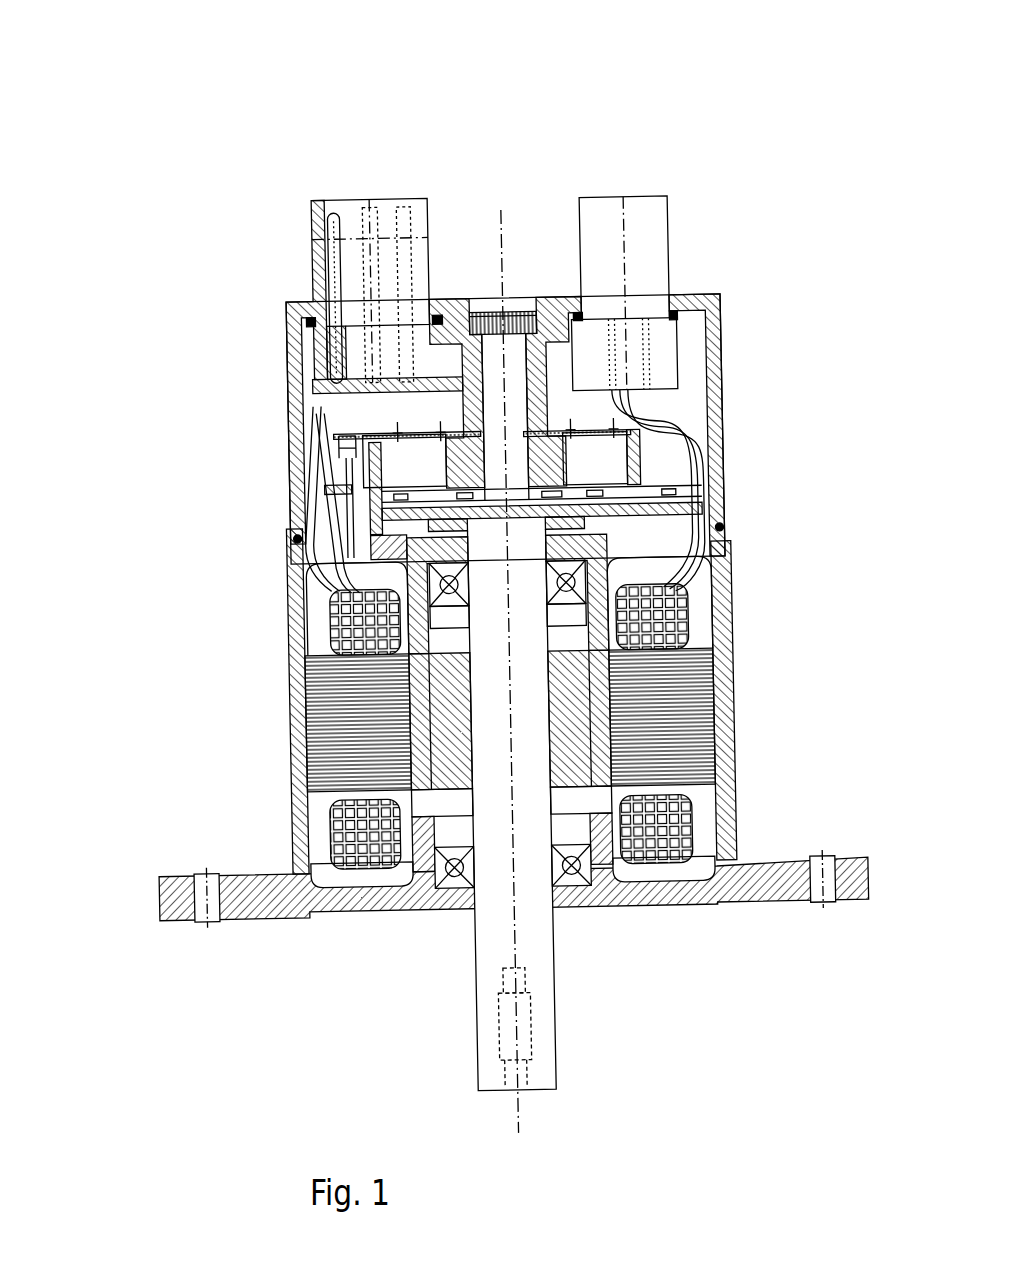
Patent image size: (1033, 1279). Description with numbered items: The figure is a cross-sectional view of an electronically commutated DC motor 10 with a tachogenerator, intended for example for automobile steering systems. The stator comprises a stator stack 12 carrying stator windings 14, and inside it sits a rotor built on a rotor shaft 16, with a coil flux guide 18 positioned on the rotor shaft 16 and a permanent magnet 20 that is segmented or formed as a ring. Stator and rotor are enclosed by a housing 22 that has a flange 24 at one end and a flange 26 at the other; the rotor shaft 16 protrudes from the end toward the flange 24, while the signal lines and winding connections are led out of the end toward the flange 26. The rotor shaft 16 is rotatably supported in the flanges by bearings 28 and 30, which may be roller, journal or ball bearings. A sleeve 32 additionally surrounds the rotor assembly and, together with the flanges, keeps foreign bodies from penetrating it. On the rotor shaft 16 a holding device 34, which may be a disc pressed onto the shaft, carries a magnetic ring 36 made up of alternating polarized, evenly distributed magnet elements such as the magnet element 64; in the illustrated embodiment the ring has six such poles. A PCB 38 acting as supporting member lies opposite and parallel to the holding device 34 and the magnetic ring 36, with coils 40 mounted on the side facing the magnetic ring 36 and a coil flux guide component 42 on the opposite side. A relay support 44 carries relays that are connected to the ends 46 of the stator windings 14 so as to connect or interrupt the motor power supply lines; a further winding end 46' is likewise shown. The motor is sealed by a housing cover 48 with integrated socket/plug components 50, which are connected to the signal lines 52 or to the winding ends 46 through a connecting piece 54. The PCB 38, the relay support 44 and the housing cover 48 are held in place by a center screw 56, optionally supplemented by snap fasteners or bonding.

The DC motor 10 is at (317, 98).
The stator stack 12 is at (307, 706).
The stator windings 14 is at (341, 617).
The rotor shaft 16 is at (482, 942).
The coil flux guide 18 is at (435, 682).
The permanent magnet 20 is at (293, 748).
The housing 22 is at (722, 831).
The flange 24 is at (207, 914).
The flange 26 is at (358, 524).
The bearing 28 is at (574, 864).
The bearing 30 is at (560, 584).
The sleeve 32 is at (395, 800).
The holding device 34 is at (689, 539).
The magnetic ring 36 is at (720, 511).
The PCB 38 is at (698, 501).
The coils 40 is at (300, 388).
The coil flux guide component 42 is at (426, 452).
The relay support 44 is at (552, 431).
The ends of the stator windings 46 is at (198, 450).
The connection lead 46' is at (202, 421).
The housing cover 48 is at (721, 342).
The socket/plug components 50 is at (425, 301).
The signal lines 52 is at (618, 344).
The connecting piece 54 is at (345, 397).
The center screw 56 is at (542, 306).
The magnet element 64 is at (612, 455).